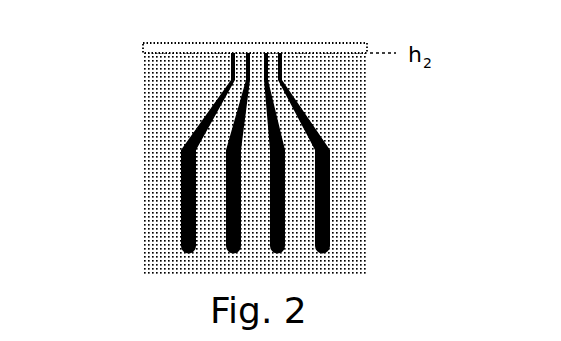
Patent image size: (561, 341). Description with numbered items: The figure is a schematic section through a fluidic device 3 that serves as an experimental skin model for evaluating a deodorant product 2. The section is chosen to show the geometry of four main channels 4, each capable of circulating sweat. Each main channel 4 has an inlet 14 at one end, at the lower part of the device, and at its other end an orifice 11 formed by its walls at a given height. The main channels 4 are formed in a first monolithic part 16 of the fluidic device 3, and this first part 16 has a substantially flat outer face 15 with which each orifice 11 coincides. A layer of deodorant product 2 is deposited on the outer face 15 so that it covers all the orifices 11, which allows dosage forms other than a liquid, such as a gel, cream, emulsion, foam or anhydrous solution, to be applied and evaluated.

The deodorant product 2 is at (331, 44).
The fluidic device 3 is at (418, 101).
The main channel 4 is at (277, 178).
The orifice 11 is at (232, 59).
The inlet 14 is at (281, 242).
The outer face 15 is at (183, 53).
The first monolithic part 16 is at (161, 149).